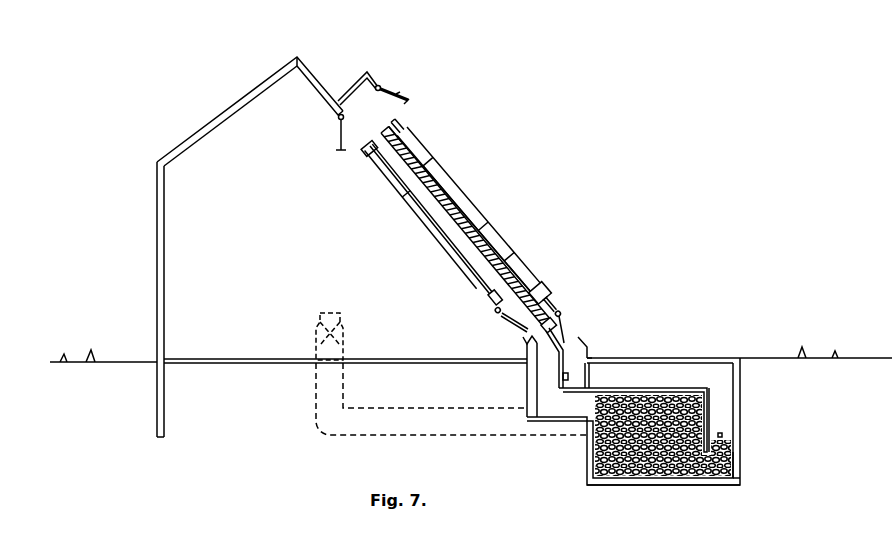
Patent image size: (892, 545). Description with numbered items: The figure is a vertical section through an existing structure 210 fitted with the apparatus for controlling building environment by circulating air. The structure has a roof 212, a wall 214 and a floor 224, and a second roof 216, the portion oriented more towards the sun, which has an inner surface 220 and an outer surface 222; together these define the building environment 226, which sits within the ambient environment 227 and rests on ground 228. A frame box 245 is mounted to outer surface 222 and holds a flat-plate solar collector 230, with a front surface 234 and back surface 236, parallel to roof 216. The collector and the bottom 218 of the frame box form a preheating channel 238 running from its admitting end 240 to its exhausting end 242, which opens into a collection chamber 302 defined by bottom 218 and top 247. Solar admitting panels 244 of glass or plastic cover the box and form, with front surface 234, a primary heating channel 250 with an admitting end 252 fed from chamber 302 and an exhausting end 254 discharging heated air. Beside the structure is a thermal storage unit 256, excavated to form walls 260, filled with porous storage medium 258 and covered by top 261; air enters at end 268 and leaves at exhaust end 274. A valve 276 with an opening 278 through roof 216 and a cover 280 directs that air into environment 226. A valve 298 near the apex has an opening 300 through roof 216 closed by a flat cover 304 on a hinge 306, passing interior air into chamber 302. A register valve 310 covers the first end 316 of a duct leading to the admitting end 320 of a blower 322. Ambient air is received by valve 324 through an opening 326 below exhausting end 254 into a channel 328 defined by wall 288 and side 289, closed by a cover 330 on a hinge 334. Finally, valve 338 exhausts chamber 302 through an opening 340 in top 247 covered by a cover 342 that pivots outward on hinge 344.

The existing structure 210 is at (219, 110).
The roof 212 is at (277, 71).
The wall 214 is at (157, 250).
The second roof 216 is at (317, 91).
The bottom 218 is at (443, 248).
The inner surface 220 is at (458, 270).
The outer surface 222 is at (300, 62).
The floor 224 is at (425, 359).
The building environment 226 is at (229, 334).
The ambient environment 227 is at (543, 181).
The ground 228 is at (124, 361).
The solar collector 230 is at (487, 225).
The front surface 234 is at (507, 243).
The back surface 236 is at (479, 292).
The channel 238 is at (426, 232).
The admitting end 240 is at (493, 306).
The exhausting end 242 is at (372, 160).
The solar admitting panels 244 is at (448, 156).
The frame box 245 is at (344, 84).
The top 247 is at (412, 122).
The channel 250 is at (462, 211).
The admitting end 252 is at (395, 130).
The exhausting end 254 is at (540, 280).
The thermal storage unit 256 is at (762, 441).
The storage medium 258 is at (590, 484).
The walls 260 is at (741, 484).
The top 261 is at (724, 357).
The end 268 is at (742, 456).
The exhaust end 274 is at (590, 392).
The valve 276 is at (507, 330).
The opening 278 is at (523, 346).
The cover 280 is at (513, 319).
The wall 288 is at (562, 378).
The side 289 is at (598, 357).
The valve 298 is at (337, 145).
The opening 300 is at (352, 148).
The collection chamber 302 is at (350, 112).
The flat cover 304 is at (338, 138).
The hinge 306 is at (338, 118).
The valve 310 is at (315, 315).
The first end 316 is at (314, 343).
The admitting end 320 is at (718, 413).
The blower 322 is at (724, 436).
The valve 324 is at (581, 327).
The opening 326 is at (584, 345).
The channel 328 is at (566, 354).
The cover 330 is at (563, 308).
The hinge 334 is at (556, 300).
The valve 338 is at (394, 85).
The opening 340 is at (402, 106).
The cover 342 is at (403, 92).
The hinge 344 is at (379, 85).